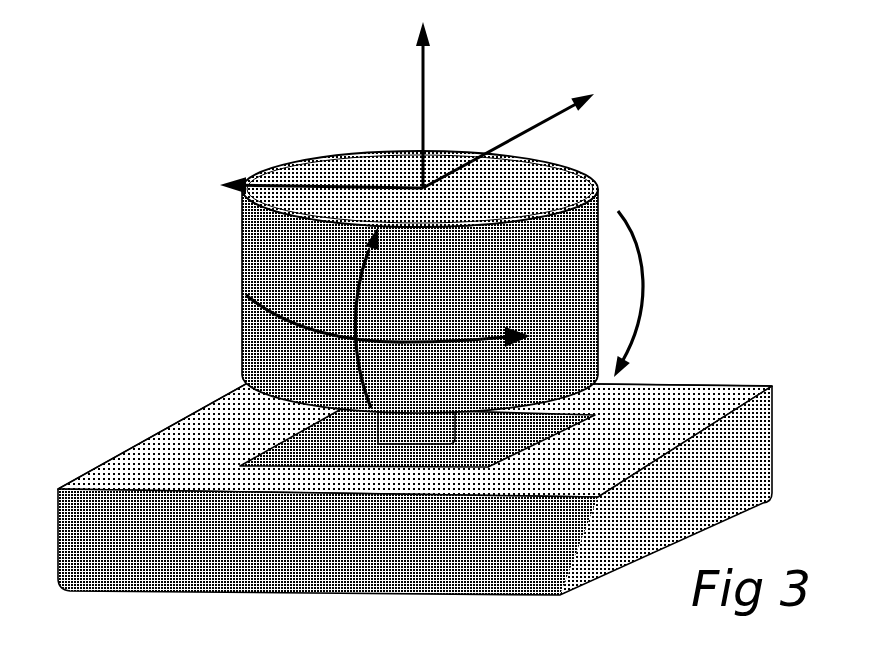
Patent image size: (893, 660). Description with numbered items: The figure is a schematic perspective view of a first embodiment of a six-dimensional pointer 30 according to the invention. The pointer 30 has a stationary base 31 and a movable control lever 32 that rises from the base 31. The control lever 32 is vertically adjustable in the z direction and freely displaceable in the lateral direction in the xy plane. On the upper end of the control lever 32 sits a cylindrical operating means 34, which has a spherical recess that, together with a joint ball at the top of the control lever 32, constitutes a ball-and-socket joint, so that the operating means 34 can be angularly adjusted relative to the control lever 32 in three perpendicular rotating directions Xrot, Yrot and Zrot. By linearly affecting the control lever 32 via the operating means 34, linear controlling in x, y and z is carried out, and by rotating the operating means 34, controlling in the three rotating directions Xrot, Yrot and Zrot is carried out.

The six-dimensional pointer 30 is at (447, 307).
The stationary base 31 is at (758, 423).
The control lever 32 is at (368, 429).
The cylindrical operating means 34 is at (244, 265).